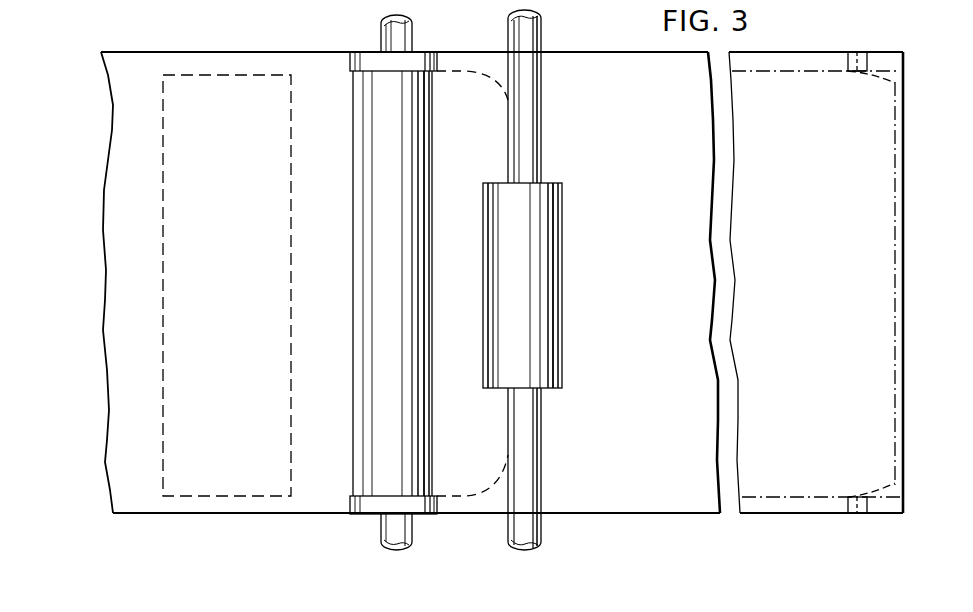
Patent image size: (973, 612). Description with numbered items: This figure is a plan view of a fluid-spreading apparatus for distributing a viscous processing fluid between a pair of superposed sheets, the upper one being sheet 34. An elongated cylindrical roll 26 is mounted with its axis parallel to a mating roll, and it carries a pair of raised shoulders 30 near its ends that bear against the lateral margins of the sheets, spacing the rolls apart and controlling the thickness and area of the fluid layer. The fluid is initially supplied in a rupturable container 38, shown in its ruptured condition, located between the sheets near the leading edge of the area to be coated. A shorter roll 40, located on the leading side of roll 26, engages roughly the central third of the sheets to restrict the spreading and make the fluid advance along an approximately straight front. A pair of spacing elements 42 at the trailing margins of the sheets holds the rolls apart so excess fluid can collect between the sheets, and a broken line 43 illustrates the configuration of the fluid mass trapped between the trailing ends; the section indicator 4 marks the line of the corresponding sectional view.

The elongated cylindrical roll 26 is at (365, 168).
The raised shoulders 30 is at (427, 52).
The sheet 34 is at (637, 144).
The rupturable container 38 is at (253, 75).
The roll 40 is at (548, 243).
The spacing elements 42 is at (878, 70).
The broken line 43 is at (905, 145).
The section line 4- 4 is at (125, 288).